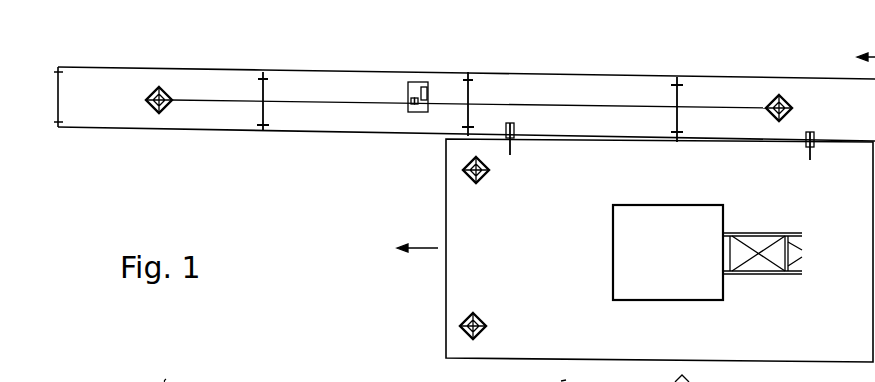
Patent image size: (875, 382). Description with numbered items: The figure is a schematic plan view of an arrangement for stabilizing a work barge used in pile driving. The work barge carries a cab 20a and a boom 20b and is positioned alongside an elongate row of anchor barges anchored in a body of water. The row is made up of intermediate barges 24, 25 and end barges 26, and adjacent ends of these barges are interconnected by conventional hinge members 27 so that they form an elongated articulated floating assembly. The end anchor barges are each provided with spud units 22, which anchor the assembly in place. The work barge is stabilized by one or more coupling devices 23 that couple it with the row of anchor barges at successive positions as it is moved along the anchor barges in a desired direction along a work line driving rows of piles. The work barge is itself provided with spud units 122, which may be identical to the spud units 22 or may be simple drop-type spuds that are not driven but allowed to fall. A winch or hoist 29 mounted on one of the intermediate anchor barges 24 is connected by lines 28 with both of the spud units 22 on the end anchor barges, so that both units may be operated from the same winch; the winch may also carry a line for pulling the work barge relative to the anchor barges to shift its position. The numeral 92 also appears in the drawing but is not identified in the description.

The cab 20a is at (691, 290).
The boom 20b is at (779, 274).
The spud unit 22 is at (146, 103).
The coupling device 23 is at (514, 148).
The intermediate barge 24 is at (328, 80).
The intermediate barge 25 is at (544, 59).
The end barge 26 is at (89, 67).
The hinge member 27 is at (261, 78).
The line 28 is at (295, 97).
The winch or hoist 29 is at (414, 83).
The carriage 92 is at (169, 372).
The spud unit 122 is at (480, 182).